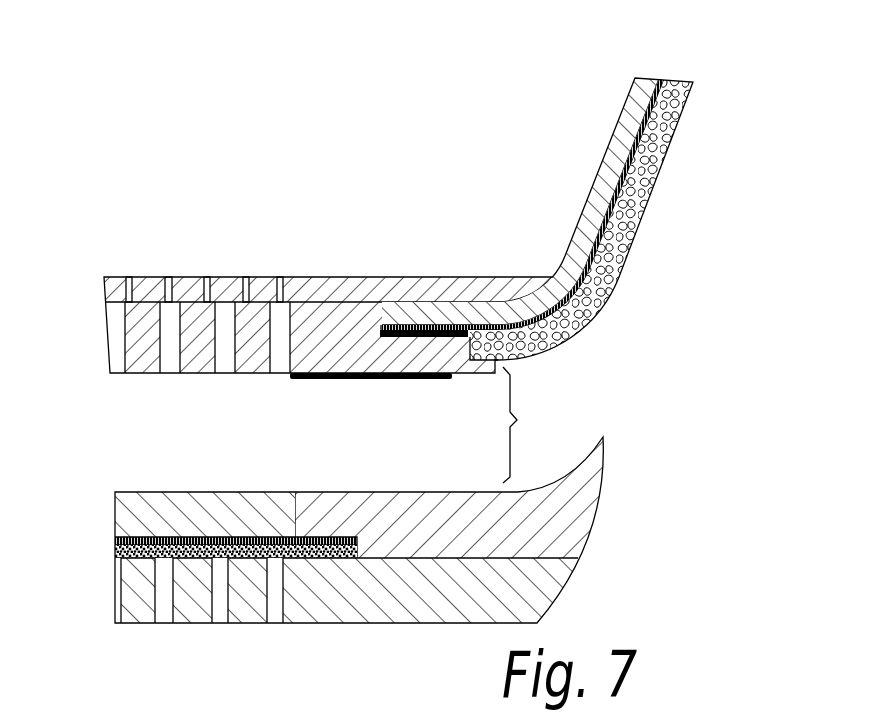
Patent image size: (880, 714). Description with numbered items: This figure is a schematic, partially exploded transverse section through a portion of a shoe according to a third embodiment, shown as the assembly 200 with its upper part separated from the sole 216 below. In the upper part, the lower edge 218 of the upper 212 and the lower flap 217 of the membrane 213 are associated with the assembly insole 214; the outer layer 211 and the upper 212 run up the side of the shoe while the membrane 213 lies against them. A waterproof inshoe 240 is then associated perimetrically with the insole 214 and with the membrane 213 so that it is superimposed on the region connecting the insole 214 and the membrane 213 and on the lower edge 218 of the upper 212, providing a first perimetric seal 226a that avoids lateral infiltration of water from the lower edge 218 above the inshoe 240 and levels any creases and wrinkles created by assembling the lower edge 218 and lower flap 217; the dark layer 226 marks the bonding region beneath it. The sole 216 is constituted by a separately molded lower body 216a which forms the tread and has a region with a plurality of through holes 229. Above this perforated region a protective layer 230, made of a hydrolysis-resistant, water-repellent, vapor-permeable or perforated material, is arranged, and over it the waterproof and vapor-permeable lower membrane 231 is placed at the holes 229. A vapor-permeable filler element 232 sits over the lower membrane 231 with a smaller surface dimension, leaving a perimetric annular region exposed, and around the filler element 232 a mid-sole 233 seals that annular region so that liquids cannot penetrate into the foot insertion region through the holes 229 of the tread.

The cushion assembly 200 is at (444, 189).
The outer cover layer 211 is at (655, 223).
The upper 212 is at (668, 136).
The membrane 213 is at (648, 117).
The assembly insole 214 is at (495, 289).
The sole 216 is at (373, 549).
The lower body 216a is at (522, 600).
The lower flap 217 is at (418, 326).
The lower edge 218 is at (548, 331).
The adhesive layer 226 is at (327, 343).
The first perimetric seal 226a is at (390, 343).
The through holes 229 is at (275, 613).
The protective layer 230 is at (113, 553).
The lower membrane 231 is at (113, 542).
The filler element 232 is at (152, 500).
The mid-sole 233 is at (587, 482).
The waterproof inshoe 240 is at (149, 328).